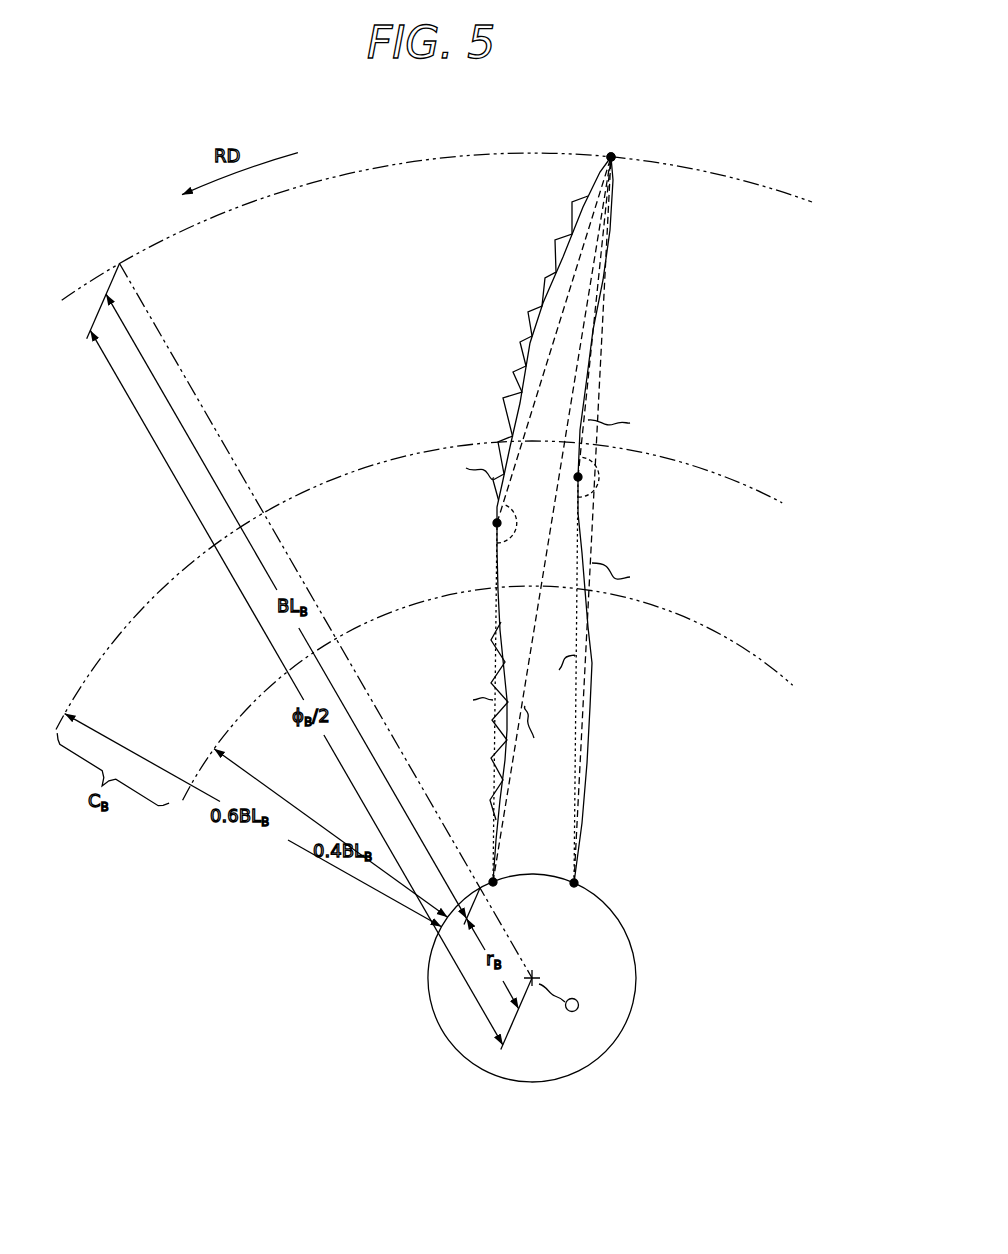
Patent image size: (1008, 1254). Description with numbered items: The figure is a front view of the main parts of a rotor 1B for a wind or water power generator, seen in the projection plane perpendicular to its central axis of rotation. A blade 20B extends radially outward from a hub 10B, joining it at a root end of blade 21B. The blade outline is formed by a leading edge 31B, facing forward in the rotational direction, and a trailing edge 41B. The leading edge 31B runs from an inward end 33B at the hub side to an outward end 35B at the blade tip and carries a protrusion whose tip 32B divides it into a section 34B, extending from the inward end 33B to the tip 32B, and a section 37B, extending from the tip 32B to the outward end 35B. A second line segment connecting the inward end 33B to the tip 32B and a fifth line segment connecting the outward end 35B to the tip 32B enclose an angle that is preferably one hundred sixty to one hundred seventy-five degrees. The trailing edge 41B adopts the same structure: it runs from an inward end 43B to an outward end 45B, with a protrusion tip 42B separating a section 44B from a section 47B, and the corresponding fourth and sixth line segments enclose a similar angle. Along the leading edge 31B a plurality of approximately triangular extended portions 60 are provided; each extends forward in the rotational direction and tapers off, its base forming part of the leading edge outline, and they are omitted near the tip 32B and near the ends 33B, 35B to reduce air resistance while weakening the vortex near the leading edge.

The rotor 1B is at (384, 378).
The hub 10B is at (625, 1000).
The blade 20B is at (600, 705).
The root end of blade 21B is at (534, 872).
The leading edge 31B is at (511, 519).
The tip of leading edge protrusion 32B is at (497, 523).
The inward end of leading edge in radial direction of rotor 33B is at (493, 882).
The section of leading edge extending from inward end to tip of leading edge protrus 34B is at (493, 800).
The outward end of leading edge in radial direction of rotor 35B is at (611, 157).
The section of leading edge extending from tip of leading edge protrusion to outward 37B is at (500, 440).
The trailing edge 41B is at (628, 520).
The tip of trailing edge protrusion 42B is at (578, 477).
The inward end of trailing edge in radial direction of rotor 43B is at (575, 886).
The section of trailing edge extending from inward end to tip of trailing edge protr 44B is at (589, 785).
The outward end of trailing edge in radial direction of rotor 45B is at (647, 127).
The section of trailing edge extending from tip of trailing edge protrusion to outwa 47B is at (595, 378).
The extended portion 60 is at (545, 277).